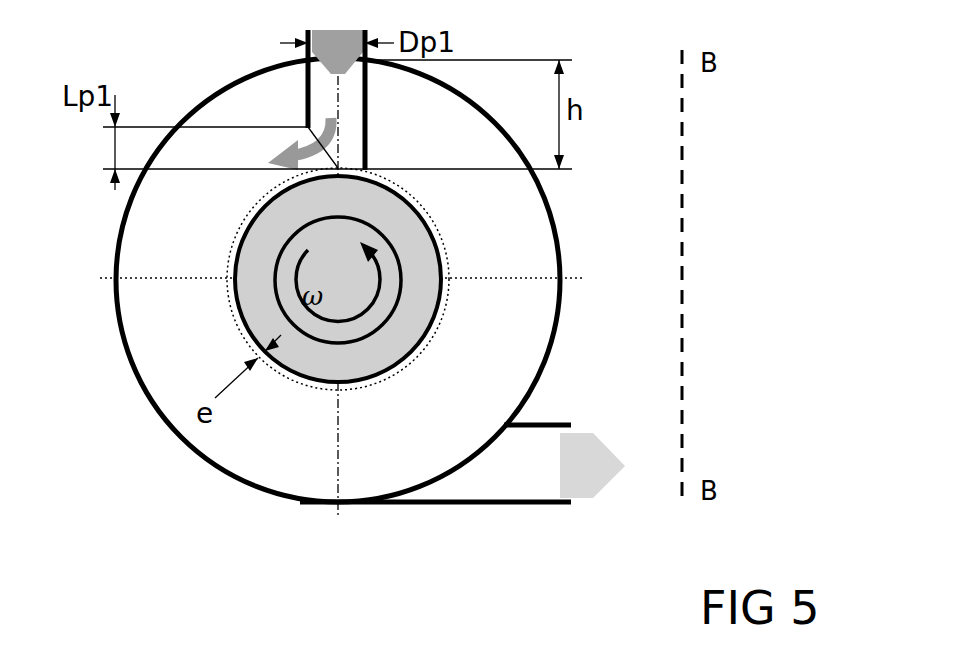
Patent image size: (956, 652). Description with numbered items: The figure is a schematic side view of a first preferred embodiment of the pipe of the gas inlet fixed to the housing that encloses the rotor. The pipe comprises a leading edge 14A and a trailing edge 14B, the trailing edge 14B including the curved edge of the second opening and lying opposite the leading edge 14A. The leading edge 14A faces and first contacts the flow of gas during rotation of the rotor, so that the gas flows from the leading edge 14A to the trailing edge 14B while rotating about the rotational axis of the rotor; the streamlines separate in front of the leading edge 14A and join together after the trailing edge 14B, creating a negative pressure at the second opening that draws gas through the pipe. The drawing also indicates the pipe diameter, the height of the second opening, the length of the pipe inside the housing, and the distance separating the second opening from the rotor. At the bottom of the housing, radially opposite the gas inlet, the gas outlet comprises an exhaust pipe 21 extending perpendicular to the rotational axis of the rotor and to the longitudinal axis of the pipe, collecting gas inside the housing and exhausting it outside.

The leading edge 14A is at (368, 138).
The trailing edge 14B is at (307, 98).
The exhaust pipe 21 is at (515, 472).